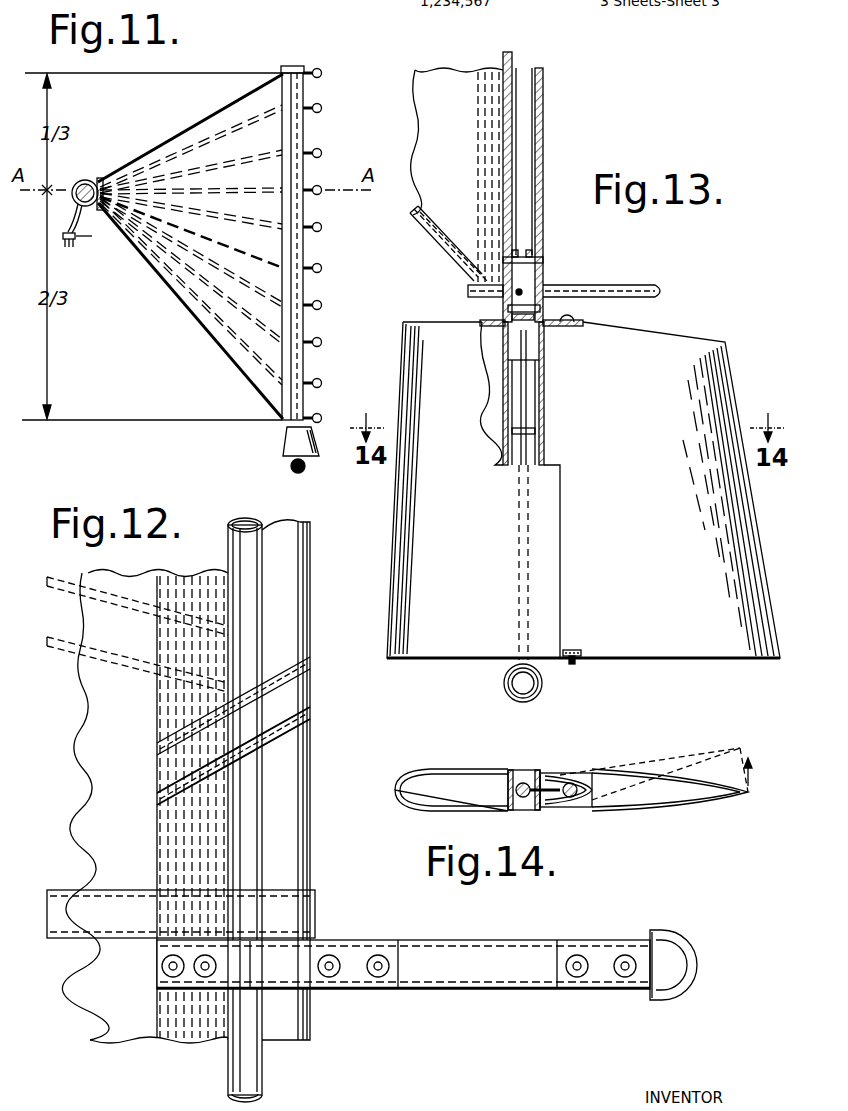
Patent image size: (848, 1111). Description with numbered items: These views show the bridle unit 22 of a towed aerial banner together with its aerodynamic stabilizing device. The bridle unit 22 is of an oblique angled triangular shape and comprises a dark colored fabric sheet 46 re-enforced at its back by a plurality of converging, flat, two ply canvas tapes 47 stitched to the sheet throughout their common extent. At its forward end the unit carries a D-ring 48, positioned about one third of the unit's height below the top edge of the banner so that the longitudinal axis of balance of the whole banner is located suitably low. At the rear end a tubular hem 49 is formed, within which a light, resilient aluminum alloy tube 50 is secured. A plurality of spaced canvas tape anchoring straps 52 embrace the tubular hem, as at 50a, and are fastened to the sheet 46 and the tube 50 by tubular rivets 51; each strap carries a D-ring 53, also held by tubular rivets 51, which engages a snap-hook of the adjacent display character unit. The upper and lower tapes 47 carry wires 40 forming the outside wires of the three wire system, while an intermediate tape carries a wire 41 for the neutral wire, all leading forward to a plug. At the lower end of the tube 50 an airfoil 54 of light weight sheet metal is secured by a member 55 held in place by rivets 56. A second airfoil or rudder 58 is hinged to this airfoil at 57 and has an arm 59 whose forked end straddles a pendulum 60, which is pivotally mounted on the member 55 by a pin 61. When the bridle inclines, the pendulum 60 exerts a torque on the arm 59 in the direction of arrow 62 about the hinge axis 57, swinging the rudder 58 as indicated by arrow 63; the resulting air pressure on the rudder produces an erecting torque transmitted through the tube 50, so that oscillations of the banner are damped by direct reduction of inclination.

In FIG. 11, the bridle unit 22 is at (190, 246).
In FIG. 13, the bridle unit 22 is at (440, 243).
In FIG. 12, the bridle unit 22 is at (199, 864).
In FIG. 11, the wires 40 is at (322, 70).
In FIG. 11, the wire 41 is at (322, 272).
In FIG. 11, the fabric sheet 46 is at (270, 177).
In FIG. 13, the fabric sheet 46 is at (457, 175).
In FIG. 12, the fabric sheet 46 is at (145, 807).
In FIG. 11, the canvas tapes 47 is at (270, 128).
In FIG. 13, the canvas tapes 47 is at (410, 200).
In FIG. 12, the canvas tapes 47 is at (60, 640).
In FIG. 11, the D-ring 48 is at (80, 180).
In FIG. 13, the tubular hem 49 is at (545, 120).
In FIG. 12, the tubular hem 49 is at (278, 590).
In FIG. 11, the tube 50 is at (293, 71).
In FIG. 13, the tube 50 is at (527, 70).
In FIG. 12, the tube 50 is at (252, 810).
In FIG. 12, the embracing portion of anchoring straps 50a is at (272, 975).
In FIG. 12, the tubular rivets 51 is at (162, 964).
In FIG. 12, the anchoring straps 52 is at (456, 990).
In FIG. 11, the D-ring 53 is at (321, 305).
In FIG. 12, the D-ring 53 is at (695, 950).
In FIG. 11, the airfoil 54 is at (286, 440).
In FIG. 13, the airfoil 54 is at (583, 490).
In FIG. 14, the airfoil 54 is at (428, 771).
In FIG. 13, the member 55 is at (512, 392).
In FIG. 13, the rivets 56 is at (522, 250).
In FIG. 13, the hinge 57 is at (572, 330).
In FIG. 14, the hinge 57 is at (566, 810).
In FIG. 11, the rudder 58 is at (312, 456).
In FIG. 13, the rudder 58 is at (690, 501).
In FIG. 14, the rudder 58 is at (688, 797).
In FIG. 13, the arm 59 is at (540, 444).
In FIG. 14, the arm 59 is at (562, 785).
In FIG. 13, the pendulum 60 is at (527, 395).
In FIG. 14, the pendulum 60 is at (516, 790).
In FIG. 13, the pin 61 is at (540, 306).
In FIG. 14, the arrow 62 is at (527, 767).
In FIG. 14, the arrow 63 is at (762, 773).